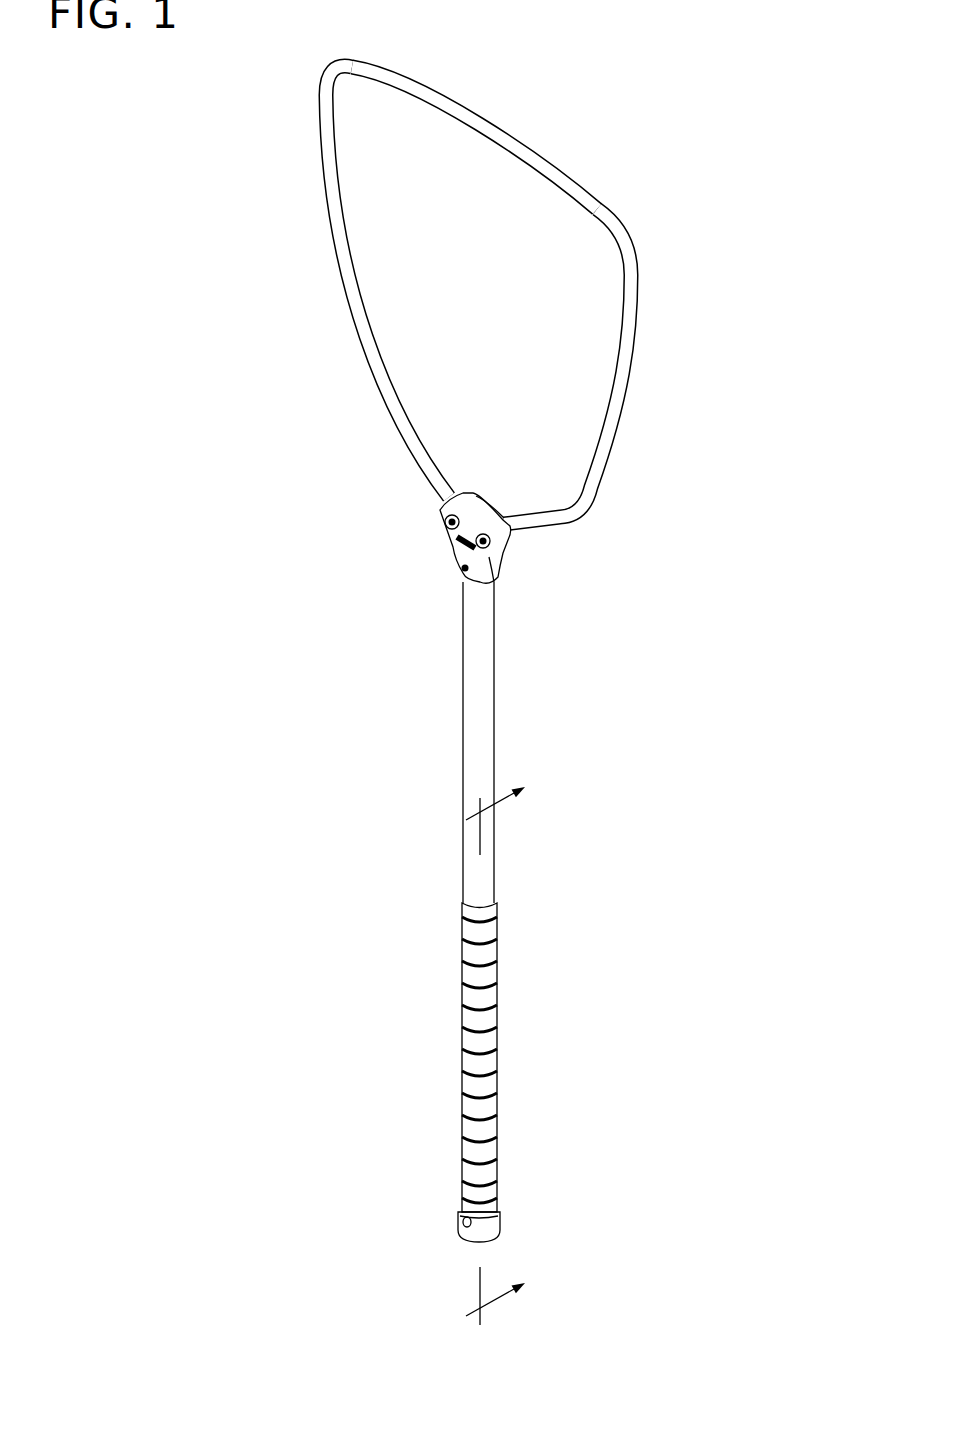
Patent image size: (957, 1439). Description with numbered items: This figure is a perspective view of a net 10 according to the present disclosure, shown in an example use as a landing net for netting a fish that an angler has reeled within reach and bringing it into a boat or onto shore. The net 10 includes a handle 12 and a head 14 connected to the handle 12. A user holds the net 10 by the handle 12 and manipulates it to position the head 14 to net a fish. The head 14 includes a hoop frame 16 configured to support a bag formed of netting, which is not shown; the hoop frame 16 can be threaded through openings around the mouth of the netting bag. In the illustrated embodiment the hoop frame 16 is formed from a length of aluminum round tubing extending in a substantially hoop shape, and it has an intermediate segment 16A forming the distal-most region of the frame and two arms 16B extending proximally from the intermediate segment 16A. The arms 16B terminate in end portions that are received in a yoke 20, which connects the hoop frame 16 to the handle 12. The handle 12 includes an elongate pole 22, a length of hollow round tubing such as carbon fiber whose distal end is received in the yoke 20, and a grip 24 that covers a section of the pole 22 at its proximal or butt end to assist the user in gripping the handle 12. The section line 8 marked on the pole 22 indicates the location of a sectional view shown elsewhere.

The net 10 is at (150, 211).
The handle 12 is at (338, 812).
The head 14 is at (722, 492).
The hoop frame 16 is at (326, 152).
The intermediate segment 16A is at (494, 128).
The arms 16B is at (383, 398).
The yoke 20 is at (452, 543).
The elongate pole 22 is at (463, 731).
The grip 24 is at (462, 993).
The section line 8 is at (484, 1073).